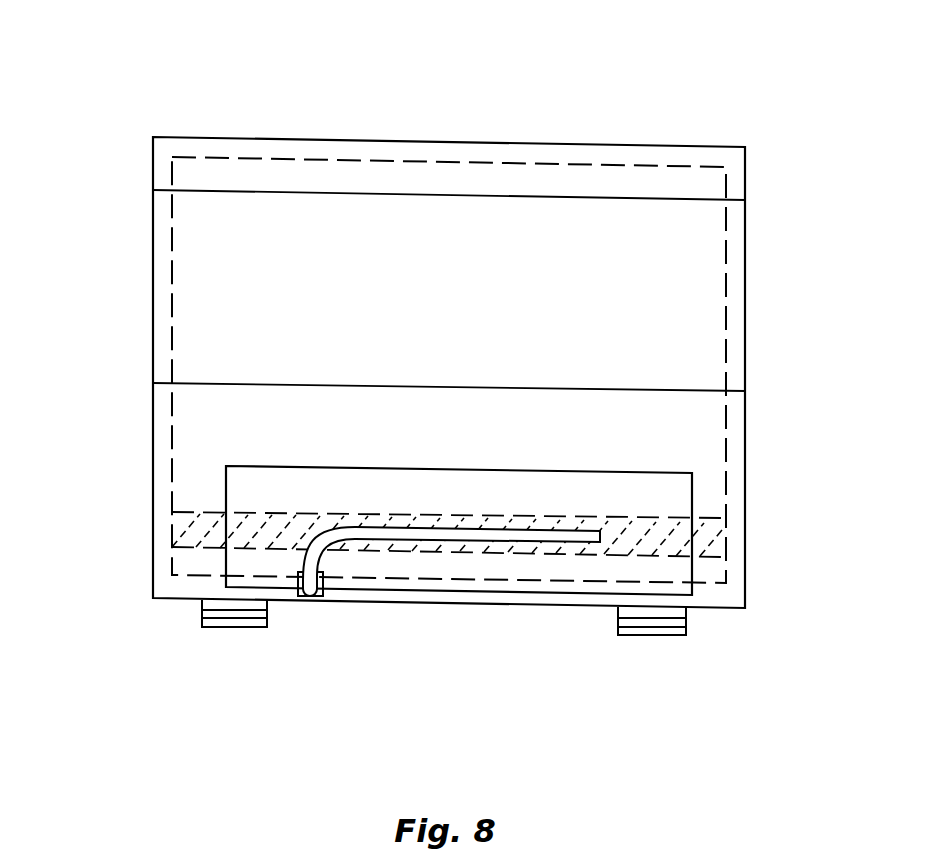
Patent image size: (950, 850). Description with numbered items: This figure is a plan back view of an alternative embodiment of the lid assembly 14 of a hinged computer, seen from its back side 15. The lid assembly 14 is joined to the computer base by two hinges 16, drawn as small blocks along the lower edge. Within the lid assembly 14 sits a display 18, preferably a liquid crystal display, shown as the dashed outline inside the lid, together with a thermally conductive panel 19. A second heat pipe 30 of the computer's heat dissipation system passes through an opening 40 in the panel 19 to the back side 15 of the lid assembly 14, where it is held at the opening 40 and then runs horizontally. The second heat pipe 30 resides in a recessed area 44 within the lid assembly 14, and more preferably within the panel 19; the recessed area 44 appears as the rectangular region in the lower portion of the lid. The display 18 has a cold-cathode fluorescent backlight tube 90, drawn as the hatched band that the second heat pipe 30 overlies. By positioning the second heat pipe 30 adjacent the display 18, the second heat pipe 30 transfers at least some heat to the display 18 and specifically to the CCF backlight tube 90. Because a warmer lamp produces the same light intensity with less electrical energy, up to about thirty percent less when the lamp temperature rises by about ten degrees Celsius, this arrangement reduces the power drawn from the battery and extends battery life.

The lid assembly 14 is at (752, 346).
The back side 15 is at (383, 268).
The hinges 16 is at (232, 630).
The display 18 is at (585, 163).
The thermally conductive panel 19 is at (710, 603).
The second heat pipe 30 is at (333, 547).
The opening 40 is at (300, 598).
The recessed area 44 is at (616, 508).
The CCF backlight tube 90 is at (192, 523).